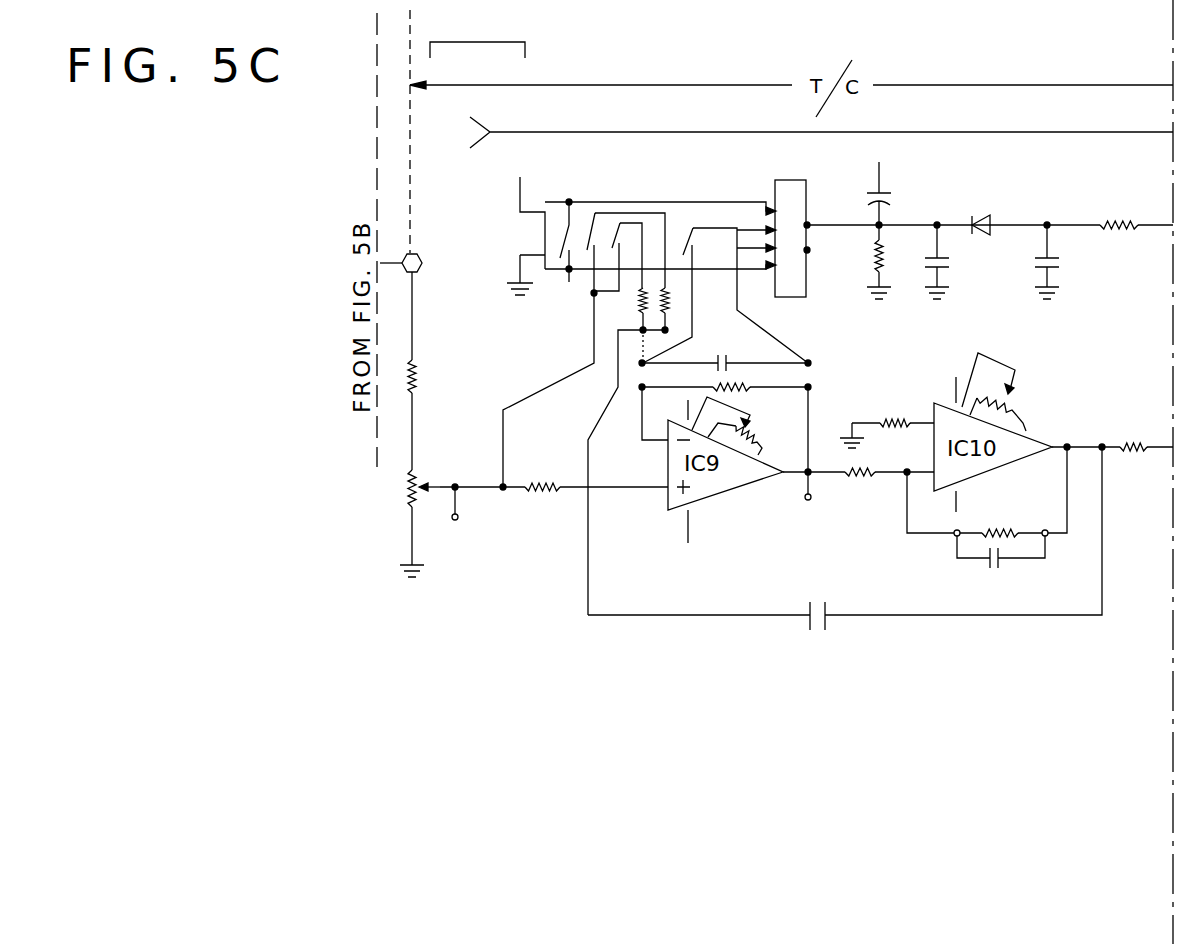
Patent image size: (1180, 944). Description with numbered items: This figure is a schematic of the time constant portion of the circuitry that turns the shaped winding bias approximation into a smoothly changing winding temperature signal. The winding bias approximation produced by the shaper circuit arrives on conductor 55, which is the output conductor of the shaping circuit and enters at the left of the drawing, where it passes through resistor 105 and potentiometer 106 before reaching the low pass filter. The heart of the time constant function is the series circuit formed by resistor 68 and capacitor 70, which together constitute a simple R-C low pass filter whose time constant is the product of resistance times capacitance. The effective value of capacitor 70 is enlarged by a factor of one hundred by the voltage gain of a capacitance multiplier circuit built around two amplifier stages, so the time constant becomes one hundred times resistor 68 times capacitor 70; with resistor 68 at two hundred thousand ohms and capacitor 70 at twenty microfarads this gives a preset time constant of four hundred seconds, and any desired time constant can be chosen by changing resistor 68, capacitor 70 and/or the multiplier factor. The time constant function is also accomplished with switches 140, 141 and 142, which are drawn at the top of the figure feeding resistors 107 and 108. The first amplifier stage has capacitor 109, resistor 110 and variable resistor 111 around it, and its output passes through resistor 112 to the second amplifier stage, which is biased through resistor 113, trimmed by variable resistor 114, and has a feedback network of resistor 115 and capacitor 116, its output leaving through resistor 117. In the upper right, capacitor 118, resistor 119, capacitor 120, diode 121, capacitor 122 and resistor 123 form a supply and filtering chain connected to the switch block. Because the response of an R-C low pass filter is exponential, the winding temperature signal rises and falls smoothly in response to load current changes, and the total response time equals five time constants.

The conductor 55 is at (388, 270).
The resistor 105 is at (424, 384).
The potentiometer 106 is at (410, 500).
The resistor 68 is at (543, 490).
The capacitor 70 is at (810, 631).
The resistor 107 is at (637, 307).
The resistor 108 is at (669, 310).
The capacitor 109 is at (728, 359).
The resistor 110 is at (745, 384).
The variable resistor 111 is at (788, 420).
The resistor 112 is at (860, 483).
The resistor 113 is at (933, 376).
The variable resistor 114 is at (1013, 412).
The resistor 115 is at (993, 531).
The capacitor 116 is at (993, 562).
The resistor 117 is at (1135, 452).
The capacitor 118 is at (880, 192).
The resistor 119 is at (882, 263).
The capacitor 120 is at (950, 265).
The diode 121 is at (1022, 186).
The capacitor 122 is at (1055, 265).
The resistor 123 is at (1137, 188).
The switch 140 is at (592, 216).
The switch 141 is at (680, 170).
The switch 142 is at (682, 242).